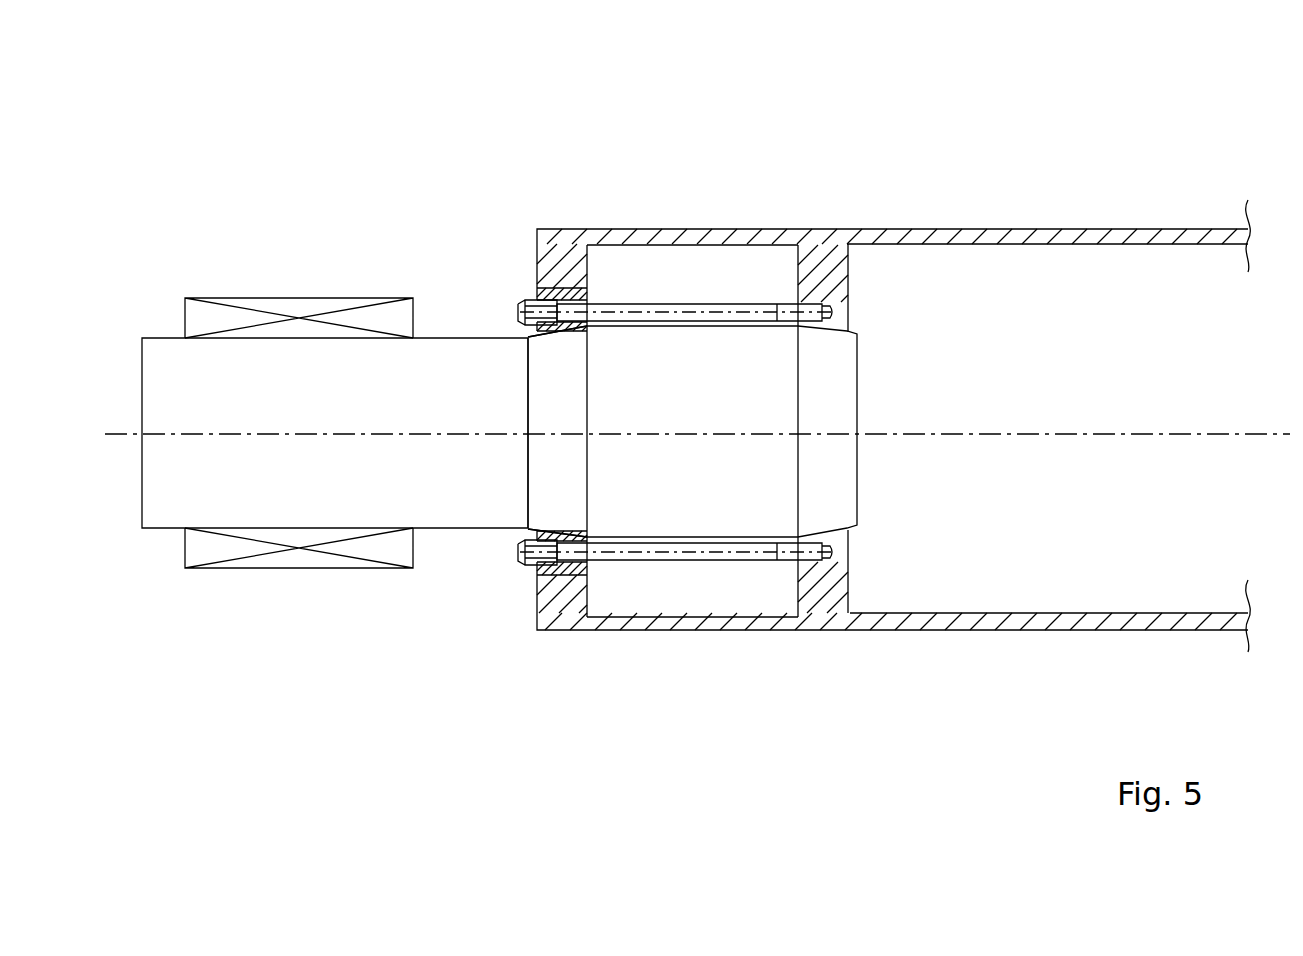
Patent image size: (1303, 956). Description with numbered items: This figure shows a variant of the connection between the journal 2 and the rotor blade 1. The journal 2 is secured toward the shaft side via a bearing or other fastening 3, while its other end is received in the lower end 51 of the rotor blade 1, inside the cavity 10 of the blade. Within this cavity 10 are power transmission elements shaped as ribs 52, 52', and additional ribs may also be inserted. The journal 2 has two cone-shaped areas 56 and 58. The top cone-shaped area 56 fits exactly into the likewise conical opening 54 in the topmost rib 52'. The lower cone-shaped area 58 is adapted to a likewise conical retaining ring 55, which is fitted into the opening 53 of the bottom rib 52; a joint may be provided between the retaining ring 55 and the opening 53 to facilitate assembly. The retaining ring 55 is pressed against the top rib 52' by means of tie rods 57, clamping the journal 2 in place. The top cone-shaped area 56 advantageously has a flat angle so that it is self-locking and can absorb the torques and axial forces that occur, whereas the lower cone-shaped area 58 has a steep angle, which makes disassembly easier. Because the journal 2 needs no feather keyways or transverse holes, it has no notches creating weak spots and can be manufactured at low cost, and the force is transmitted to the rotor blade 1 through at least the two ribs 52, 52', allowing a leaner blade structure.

The rotor blade 1 is at (1090, 230).
The journal 2 is at (417, 473).
The bearing or other fastening 3 is at (300, 318).
The cavity 10 is at (1083, 337).
The lower end 51 is at (926, 146).
The bottom rib 52 is at (870, 499).
The topmost rib 52' is at (780, 529).
The opening 53 is at (568, 578).
The conical opening 54 is at (847, 532).
The retaining ring 55 is at (550, 288).
The top cone-shaped area 56 is at (845, 462).
The tie rods 57 is at (652, 310).
The lower cone-shaped area 58 is at (549, 368).